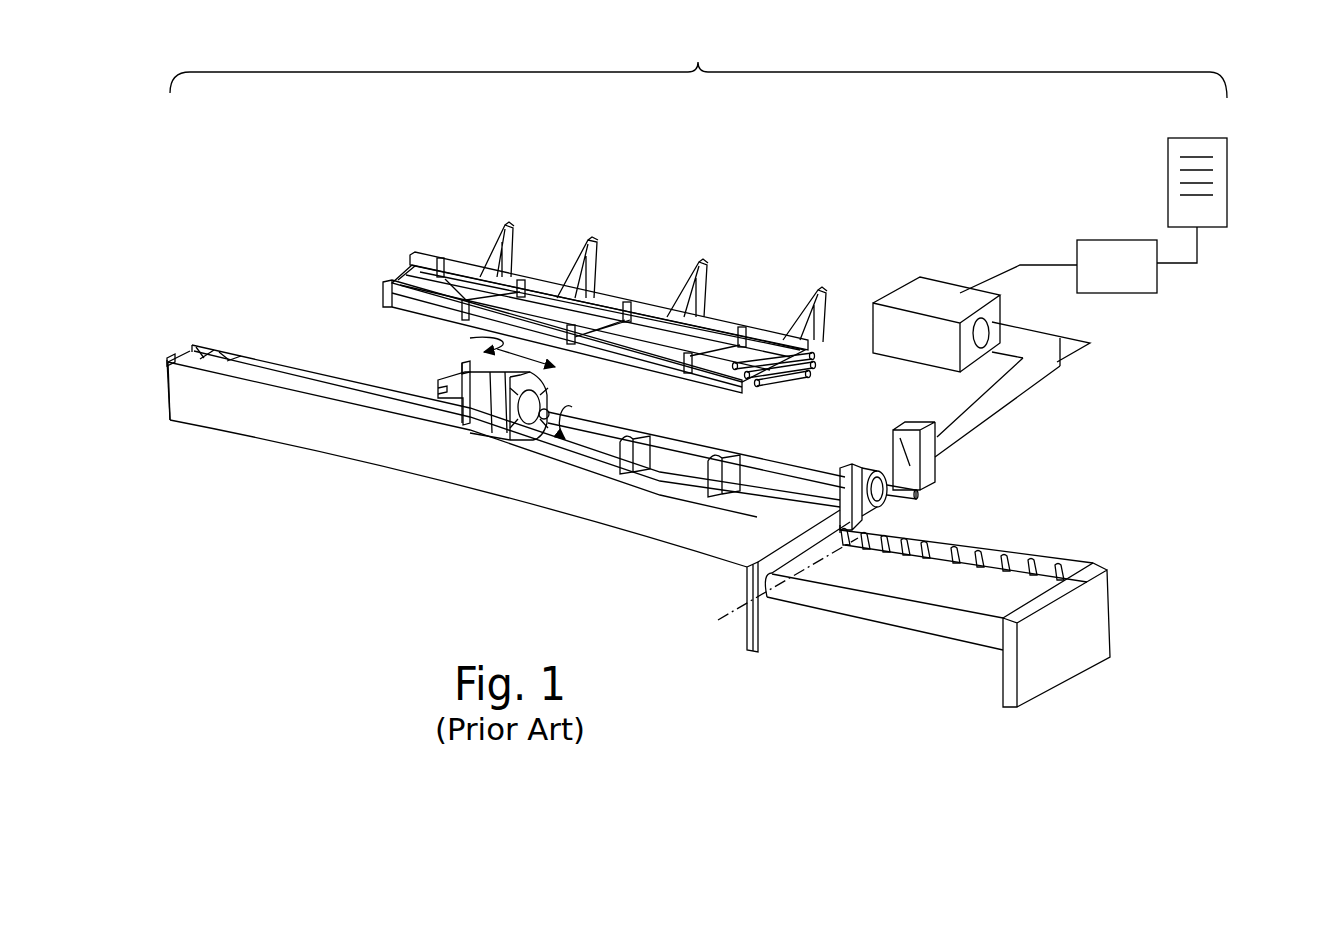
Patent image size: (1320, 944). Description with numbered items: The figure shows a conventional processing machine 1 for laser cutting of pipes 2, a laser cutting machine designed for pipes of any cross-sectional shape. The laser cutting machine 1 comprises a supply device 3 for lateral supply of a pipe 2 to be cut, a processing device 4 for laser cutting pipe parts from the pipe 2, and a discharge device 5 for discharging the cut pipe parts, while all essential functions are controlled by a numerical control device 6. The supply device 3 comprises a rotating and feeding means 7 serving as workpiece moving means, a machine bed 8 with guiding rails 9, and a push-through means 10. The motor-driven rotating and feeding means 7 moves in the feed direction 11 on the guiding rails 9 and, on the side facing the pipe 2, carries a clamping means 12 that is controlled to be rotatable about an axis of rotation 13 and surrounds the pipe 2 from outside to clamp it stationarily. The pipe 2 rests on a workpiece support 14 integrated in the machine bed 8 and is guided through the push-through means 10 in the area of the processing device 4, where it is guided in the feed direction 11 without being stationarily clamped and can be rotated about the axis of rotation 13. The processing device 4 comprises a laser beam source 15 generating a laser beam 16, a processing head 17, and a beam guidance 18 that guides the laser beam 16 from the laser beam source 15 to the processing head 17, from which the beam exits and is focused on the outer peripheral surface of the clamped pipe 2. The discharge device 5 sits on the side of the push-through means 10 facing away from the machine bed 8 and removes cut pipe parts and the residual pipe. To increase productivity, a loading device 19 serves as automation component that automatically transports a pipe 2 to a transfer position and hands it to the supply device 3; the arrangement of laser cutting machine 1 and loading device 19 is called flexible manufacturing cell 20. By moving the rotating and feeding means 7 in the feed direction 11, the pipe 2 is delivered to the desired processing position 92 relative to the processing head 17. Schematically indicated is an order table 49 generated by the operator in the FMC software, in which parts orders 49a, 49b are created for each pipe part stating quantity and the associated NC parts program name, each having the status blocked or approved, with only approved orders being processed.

The processing machine 1 is at (930, 210).
The pipe 2 is at (778, 460).
The supply device 3 is at (303, 230).
The processing device 4 is at (867, 233).
The discharge device 5 is at (933, 663).
The numerical control device 6 is at (1117, 272).
The rotating and feeding means 7 is at (500, 397).
The machine bed 8 is at (220, 407).
The guiding rails 9 is at (190, 355).
The push-through means 10 is at (850, 510).
The feed direction 11 is at (470, 338).
The clamping means 12 is at (530, 422).
The axis of rotation 13 is at (580, 405).
The workpiece support 14 is at (715, 478).
The laser beam source 15 is at (935, 293).
The laser beam 16 is at (918, 496).
The processing head 17 is at (930, 452).
The beam guidance 18 is at (1007, 400).
The loading device 19 is at (655, 240).
The flexible manufacturing cell 20 is at (698, 69).
The order table 49 is at (1194, 157).
The parts order 49a is at (1185, 152).
The parts order 49b is at (1185, 170).
The processing position 92 is at (728, 620).